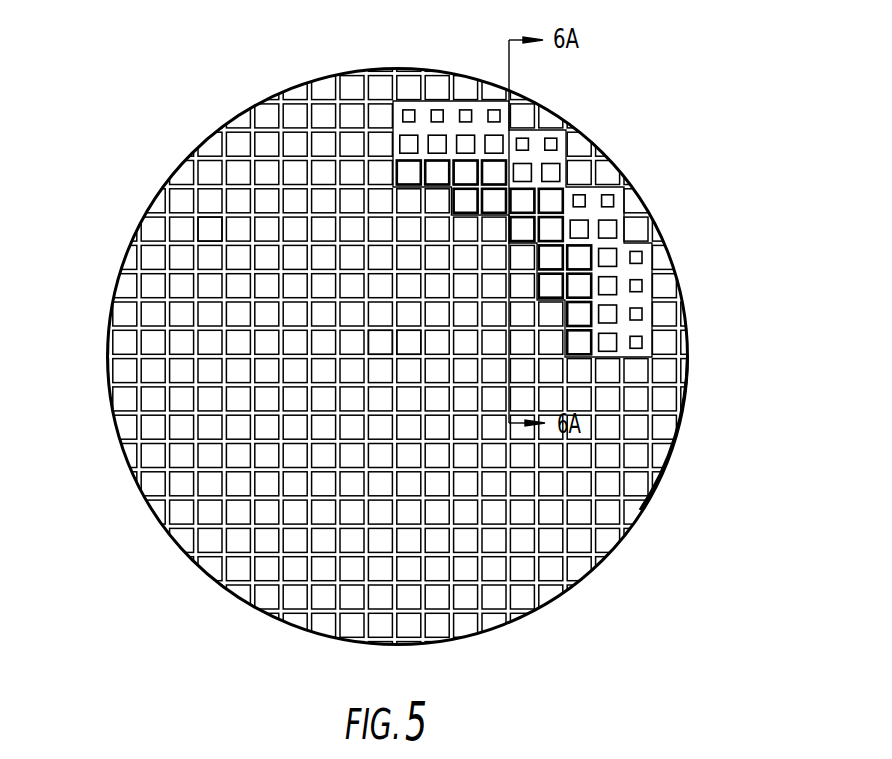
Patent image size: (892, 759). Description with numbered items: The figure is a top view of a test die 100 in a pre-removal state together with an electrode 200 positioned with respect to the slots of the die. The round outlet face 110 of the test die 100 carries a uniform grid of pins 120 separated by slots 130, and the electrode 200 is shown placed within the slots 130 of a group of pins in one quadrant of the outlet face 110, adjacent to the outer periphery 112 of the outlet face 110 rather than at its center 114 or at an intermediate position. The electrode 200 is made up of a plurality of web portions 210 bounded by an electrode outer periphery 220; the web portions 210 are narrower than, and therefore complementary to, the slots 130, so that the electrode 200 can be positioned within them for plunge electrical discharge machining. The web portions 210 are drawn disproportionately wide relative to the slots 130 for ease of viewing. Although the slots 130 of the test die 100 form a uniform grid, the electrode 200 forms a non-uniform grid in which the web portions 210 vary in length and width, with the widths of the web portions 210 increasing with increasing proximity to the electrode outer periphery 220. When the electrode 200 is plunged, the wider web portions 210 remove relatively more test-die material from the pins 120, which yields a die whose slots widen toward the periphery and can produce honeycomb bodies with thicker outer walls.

The test die 100 is at (620, 173).
The outlet face 110 is at (326, 239).
The outer periphery 112 is at (213, 234).
The center 114 is at (393, 353).
The pins 120 is at (492, 178).
The slots 130 is at (648, 432).
The electrode 200 is at (537, 148).
The web portions 210 is at (508, 172).
The electrode outer periphery 220 is at (555, 157).